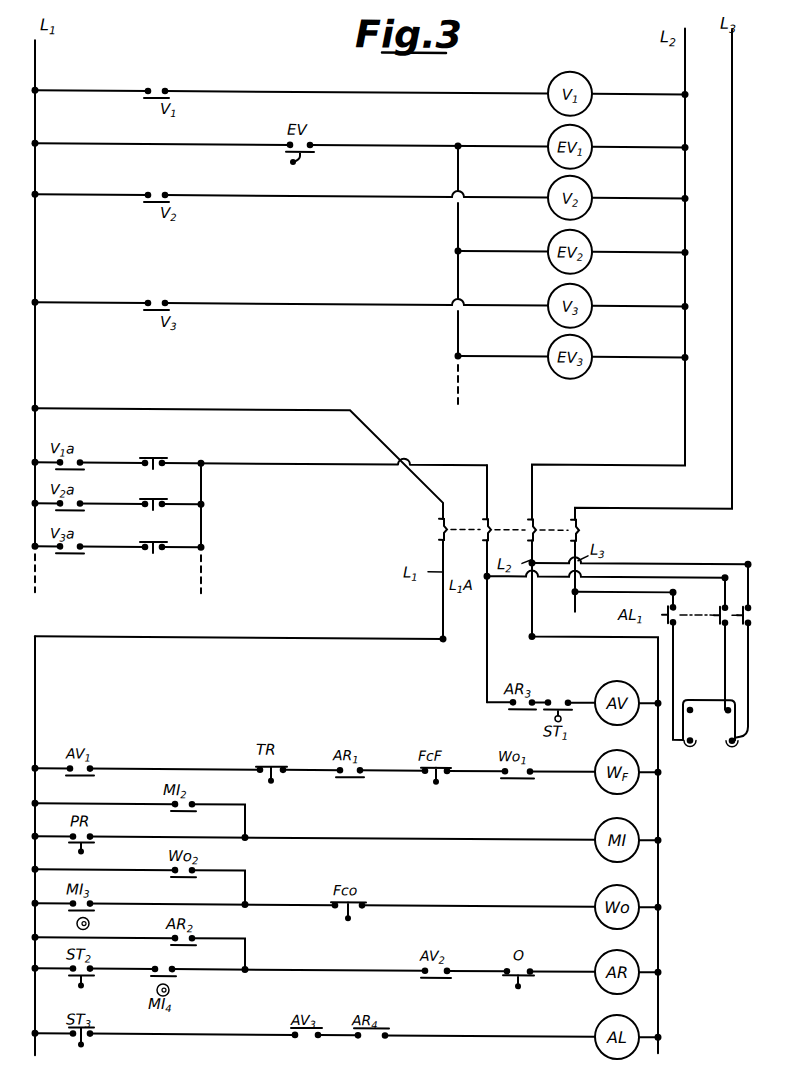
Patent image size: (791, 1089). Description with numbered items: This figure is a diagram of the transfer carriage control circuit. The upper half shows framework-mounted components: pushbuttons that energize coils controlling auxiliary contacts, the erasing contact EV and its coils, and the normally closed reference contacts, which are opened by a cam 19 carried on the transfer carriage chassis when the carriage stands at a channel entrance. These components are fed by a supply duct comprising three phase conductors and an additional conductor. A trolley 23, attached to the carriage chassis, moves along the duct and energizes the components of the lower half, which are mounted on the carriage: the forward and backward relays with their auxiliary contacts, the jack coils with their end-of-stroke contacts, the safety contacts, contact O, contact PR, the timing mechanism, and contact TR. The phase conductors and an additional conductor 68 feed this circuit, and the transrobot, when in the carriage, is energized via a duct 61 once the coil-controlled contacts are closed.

The cam 19 is at (142, 476).
The trolley 23 is at (508, 522).
The additional conductor 68 is at (692, 702).
The duct 61 is at (752, 738).